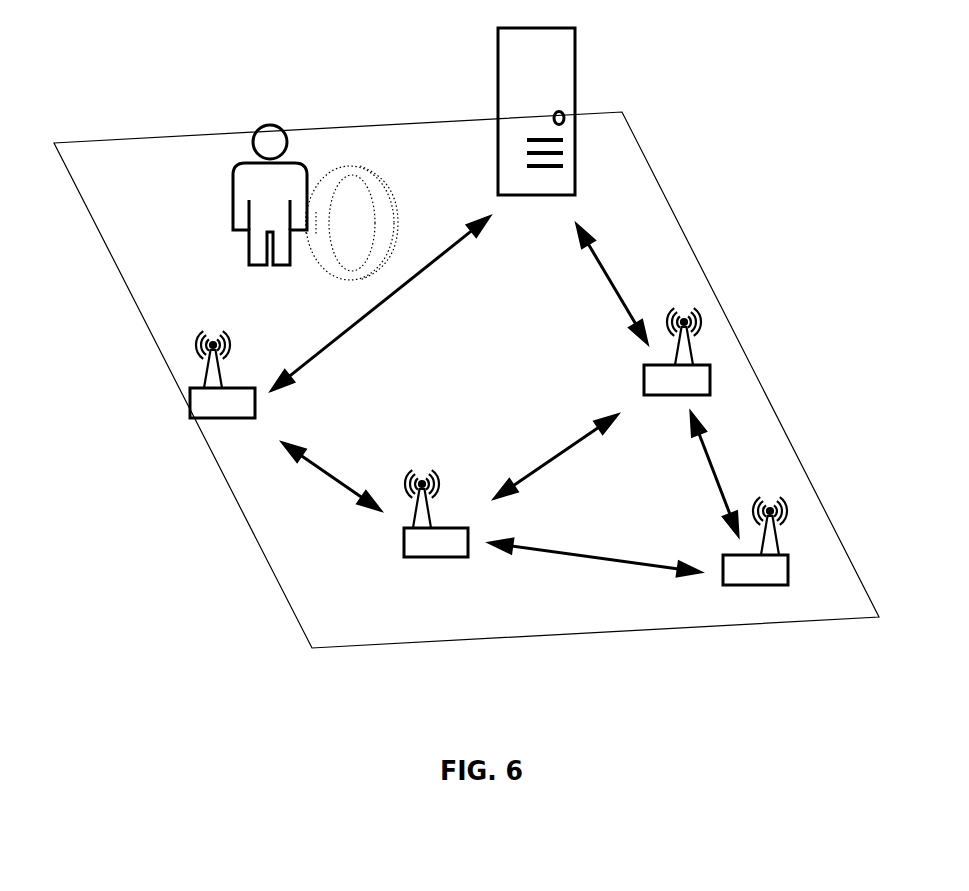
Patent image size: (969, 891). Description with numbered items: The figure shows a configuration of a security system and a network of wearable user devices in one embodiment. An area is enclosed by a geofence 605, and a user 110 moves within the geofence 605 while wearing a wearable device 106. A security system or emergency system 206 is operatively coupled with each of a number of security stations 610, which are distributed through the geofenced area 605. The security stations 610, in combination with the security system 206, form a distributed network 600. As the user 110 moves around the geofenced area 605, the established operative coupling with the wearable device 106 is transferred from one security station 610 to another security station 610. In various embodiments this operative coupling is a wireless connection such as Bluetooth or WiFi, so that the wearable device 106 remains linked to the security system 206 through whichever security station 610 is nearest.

The security system 206 is at (545, 63).
The user 110 is at (290, 198).
The wearable device 106 is at (369, 231).
The security station 610 is at (773, 581).
The geofence 605 is at (686, 239).
The distributed network 600 is at (260, 487).